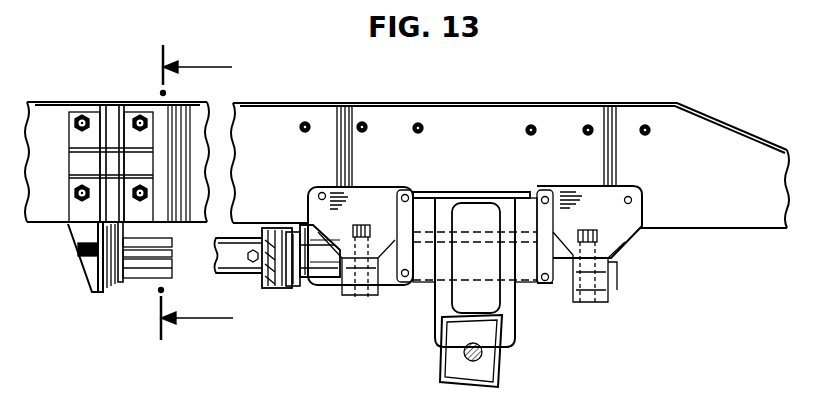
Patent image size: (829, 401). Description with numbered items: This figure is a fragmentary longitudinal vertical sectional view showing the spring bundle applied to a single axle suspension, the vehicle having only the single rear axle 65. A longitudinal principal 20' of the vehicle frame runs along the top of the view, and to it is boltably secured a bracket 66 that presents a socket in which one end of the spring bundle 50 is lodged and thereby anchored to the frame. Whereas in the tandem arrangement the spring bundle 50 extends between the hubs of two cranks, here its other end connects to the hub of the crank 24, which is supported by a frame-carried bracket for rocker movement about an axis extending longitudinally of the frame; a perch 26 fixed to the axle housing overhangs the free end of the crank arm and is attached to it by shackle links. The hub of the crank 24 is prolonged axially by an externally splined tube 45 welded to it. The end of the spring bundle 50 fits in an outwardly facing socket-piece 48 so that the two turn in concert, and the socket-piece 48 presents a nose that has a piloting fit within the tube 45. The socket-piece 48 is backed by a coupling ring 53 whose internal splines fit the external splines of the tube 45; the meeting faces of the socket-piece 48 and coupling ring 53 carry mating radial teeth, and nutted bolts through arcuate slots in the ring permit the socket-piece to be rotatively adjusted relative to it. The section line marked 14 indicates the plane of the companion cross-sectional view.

The section line 14- 14 is at (215, 192).
The longitudinal principal 20' is at (510, 155).
The crank 24 is at (425, 285).
The perch 26 is at (487, 203).
The externally splined tube 45 is at (322, 278).
The socket-piece 48 is at (263, 292).
The spring bundle 50 is at (236, 263).
The coupling ring 53 is at (290, 286).
The single rear axle 65 is at (500, 372).
The bracket 66 is at (93, 282).